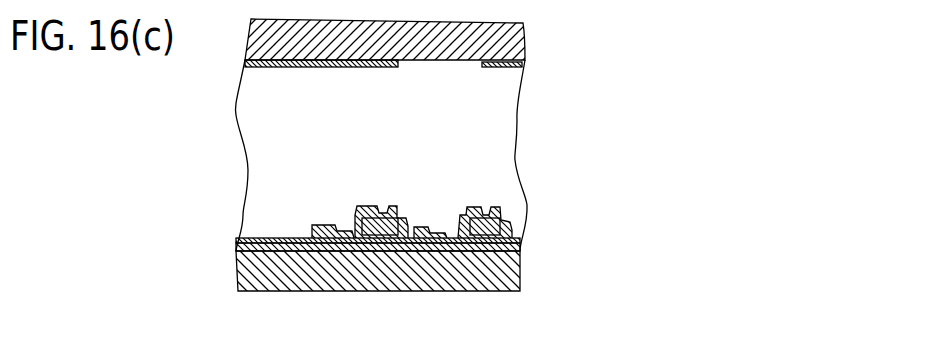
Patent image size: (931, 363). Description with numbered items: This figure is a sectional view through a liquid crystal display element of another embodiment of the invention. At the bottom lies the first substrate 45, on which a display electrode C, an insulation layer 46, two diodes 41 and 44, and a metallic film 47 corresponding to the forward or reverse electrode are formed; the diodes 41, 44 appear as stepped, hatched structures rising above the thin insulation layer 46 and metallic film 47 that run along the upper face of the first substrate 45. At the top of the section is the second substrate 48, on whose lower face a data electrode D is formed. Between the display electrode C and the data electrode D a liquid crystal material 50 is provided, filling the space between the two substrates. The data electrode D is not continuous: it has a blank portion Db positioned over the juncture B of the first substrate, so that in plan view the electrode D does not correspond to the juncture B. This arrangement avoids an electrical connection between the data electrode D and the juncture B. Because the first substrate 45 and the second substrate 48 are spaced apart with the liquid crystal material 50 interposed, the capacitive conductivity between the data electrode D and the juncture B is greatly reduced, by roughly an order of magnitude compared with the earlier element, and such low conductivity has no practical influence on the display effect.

The second substrate 48 is at (524, 42).
The data electrode D is at (524, 65).
The blank portion Db is at (455, 63).
The liquid crystal material 50 is at (497, 163).
The juncture B is at (432, 217).
The metallic film 47 is at (500, 215).
The insulation layer 46 is at (517, 250).
The diode 44 is at (378, 251).
The display electrode C is at (420, 251).
The diode 41 is at (470, 251).
The first substrate 45 is at (506, 270).